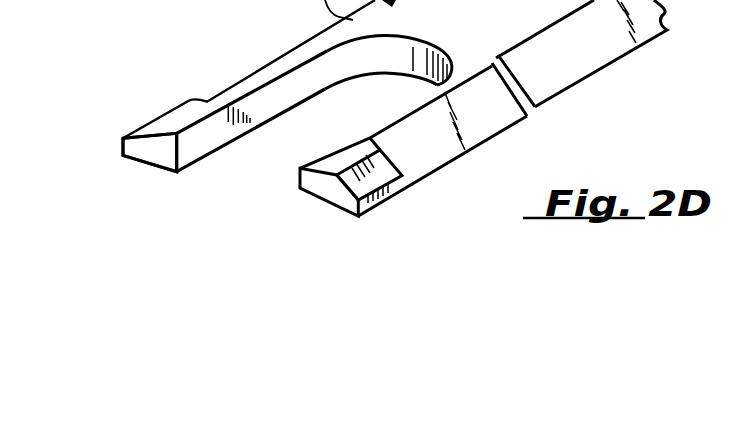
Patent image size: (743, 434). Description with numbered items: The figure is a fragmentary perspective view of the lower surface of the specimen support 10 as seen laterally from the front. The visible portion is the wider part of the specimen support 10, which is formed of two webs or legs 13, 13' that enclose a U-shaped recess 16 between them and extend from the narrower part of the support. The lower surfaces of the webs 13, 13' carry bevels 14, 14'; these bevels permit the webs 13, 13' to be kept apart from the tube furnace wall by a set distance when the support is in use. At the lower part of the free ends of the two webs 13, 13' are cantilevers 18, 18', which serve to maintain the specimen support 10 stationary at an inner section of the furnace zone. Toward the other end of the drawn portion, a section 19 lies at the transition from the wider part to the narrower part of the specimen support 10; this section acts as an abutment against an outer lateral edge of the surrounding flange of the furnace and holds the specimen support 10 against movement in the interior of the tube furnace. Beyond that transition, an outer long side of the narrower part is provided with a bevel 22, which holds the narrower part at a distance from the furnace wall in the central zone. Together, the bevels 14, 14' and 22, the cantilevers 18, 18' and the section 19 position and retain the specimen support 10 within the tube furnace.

The specimen support 10 is at (119, 59).
The web 13 is at (369, 211).
The web 13' is at (112, 159).
The bevel 14 is at (428, 141).
The bevel 14' is at (249, 86).
The U-shaped recess 16 is at (254, 166).
The cantilever 18 is at (366, 200).
The cantilever 18' is at (131, 159).
The section 19 is at (495, 62).
The bevel 22 is at (604, 46).